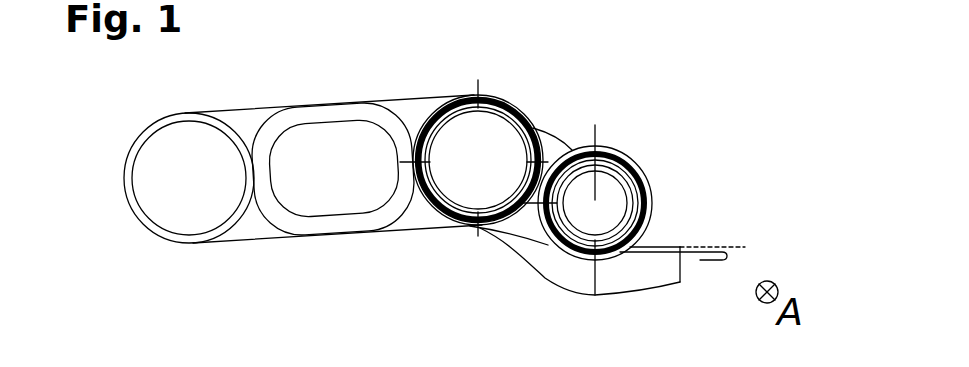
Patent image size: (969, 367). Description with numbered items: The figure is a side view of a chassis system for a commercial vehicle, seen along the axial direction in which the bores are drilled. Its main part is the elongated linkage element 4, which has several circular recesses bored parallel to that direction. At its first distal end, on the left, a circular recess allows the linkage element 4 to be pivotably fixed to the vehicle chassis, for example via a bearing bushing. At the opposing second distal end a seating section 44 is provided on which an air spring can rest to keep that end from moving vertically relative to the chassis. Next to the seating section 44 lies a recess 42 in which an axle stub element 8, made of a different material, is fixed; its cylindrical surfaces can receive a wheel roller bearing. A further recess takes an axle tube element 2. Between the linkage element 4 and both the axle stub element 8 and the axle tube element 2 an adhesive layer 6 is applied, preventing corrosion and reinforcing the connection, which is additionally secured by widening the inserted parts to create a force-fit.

The axle tube element 2 is at (468, 221).
The linkage element 4 is at (260, 221).
The adhesive layer 6 is at (448, 217).
The axle stub element 8 is at (623, 181).
The recess 42 is at (595, 125).
The seating section 44 is at (680, 282).